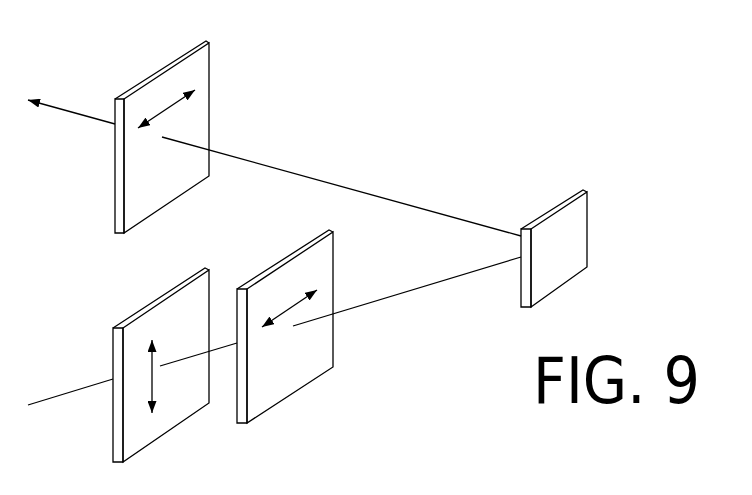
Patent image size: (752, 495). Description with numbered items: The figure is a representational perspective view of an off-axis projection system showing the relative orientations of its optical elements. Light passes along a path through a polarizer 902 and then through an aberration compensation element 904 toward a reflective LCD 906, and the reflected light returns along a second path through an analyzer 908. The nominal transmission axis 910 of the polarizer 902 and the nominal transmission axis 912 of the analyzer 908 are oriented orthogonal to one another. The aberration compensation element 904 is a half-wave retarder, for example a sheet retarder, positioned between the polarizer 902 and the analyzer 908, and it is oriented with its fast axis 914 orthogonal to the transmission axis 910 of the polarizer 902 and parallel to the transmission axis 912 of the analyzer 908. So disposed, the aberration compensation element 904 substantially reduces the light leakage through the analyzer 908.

The polarizer 902 is at (138, 427).
The aberration compensation element 904 is at (335, 343).
The reflective LCD 906 is at (577, 223).
The analyzer 908 is at (210, 60).
The nominal transmission axis 910 is at (148, 370).
The nominal transmission axis 912 is at (167, 108).
The fast axis 914 is at (282, 312).